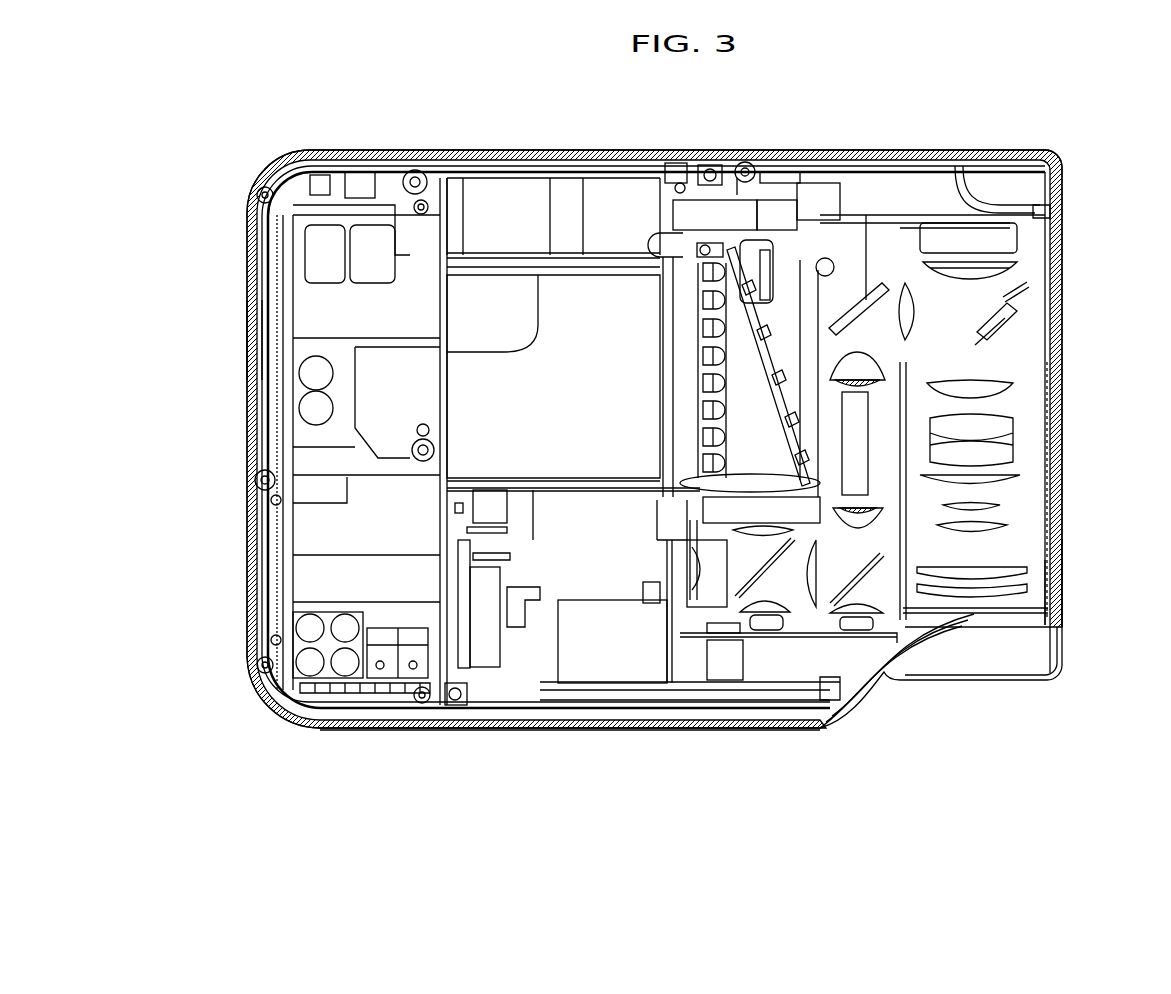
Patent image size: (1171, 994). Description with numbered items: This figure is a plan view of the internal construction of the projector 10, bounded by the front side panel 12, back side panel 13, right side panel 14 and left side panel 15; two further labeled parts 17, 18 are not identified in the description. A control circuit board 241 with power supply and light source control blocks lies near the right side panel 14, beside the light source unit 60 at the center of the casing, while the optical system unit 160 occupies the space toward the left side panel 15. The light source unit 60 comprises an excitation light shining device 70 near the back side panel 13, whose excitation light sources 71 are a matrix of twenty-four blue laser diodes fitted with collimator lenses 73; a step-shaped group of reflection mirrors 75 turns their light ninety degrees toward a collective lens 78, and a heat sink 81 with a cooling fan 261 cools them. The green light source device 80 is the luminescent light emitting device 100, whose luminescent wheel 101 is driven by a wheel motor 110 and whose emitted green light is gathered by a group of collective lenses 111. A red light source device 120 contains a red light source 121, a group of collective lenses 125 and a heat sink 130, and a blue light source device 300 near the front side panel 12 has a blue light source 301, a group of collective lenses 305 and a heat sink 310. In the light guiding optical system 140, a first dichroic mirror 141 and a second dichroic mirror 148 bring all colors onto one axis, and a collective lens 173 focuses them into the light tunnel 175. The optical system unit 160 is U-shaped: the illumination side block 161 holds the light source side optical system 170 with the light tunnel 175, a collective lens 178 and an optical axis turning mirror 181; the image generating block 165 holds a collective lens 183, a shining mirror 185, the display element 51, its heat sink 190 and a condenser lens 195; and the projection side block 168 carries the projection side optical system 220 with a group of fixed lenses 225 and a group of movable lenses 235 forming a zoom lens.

The projector 10 is at (1072, 145).
The front side panel 12 is at (377, 732).
The back side panel 13 is at (542, 152).
The right side panel 14 is at (253, 332).
The left side panel 15 is at (1063, 573).
The inner wall 17 is at (258, 363).
The frame member 18 is at (507, 165).
The display element 51 is at (1008, 253).
The light source unit 60 is at (648, 413).
The excitation light shining device 70 is at (687, 198).
The excitation light sources 71 is at (703, 358).
The collimator lenses 73 is at (700, 330).
The group of reflection mirrors 75 is at (752, 383).
The collective lens 78 is at (755, 488).
The green light source device 80 is at (732, 445).
The heat sink 81 is at (582, 340).
The luminescent light emitting device 100 is at (720, 690).
The luminescent wheel 101 is at (650, 718).
The wheel motor 110 is at (697, 727).
The group of collective lenses 111 is at (795, 617).
The red light source device 120 is at (600, 700).
The red light source 121 is at (665, 575).
The group of collective lenses 125 is at (660, 547).
The heat sink 130 is at (565, 558).
The light guiding optical system 140 is at (925, 630).
The first dichroic mirror 141 is at (762, 580).
The second dichroic mirror 148 is at (845, 580).
The optical system unit 160 is at (965, 617).
The illumination side block 161 is at (878, 337).
The image generating block 165 is at (1012, 292).
The projection side block 168 is at (1020, 432).
The light source side optical system 170 is at (872, 273).
The collective lens 173 is at (836, 518).
The light tunnel 175 is at (855, 481).
The collective lens 178 is at (835, 361).
The optical axis turning mirror 181 is at (863, 300).
The collective lens 183 is at (917, 301).
The shining mirror 185 is at (990, 331).
The heat sink 190 is at (937, 187).
The condenser lens 195 is at (1008, 270).
The projection side optical system 220 is at (1020, 457).
The group of fixed lenses 225 is at (1050, 683).
The group of movable lenses 235 is at (1020, 410).
The control circuit board 241 is at (310, 513).
The cooling fan 261 is at (462, 152).
The blue light source device 300 is at (855, 633).
The blue light source 301 is at (890, 637).
The group of collective lenses 305 is at (868, 598).
The heat sink 310 is at (807, 727).